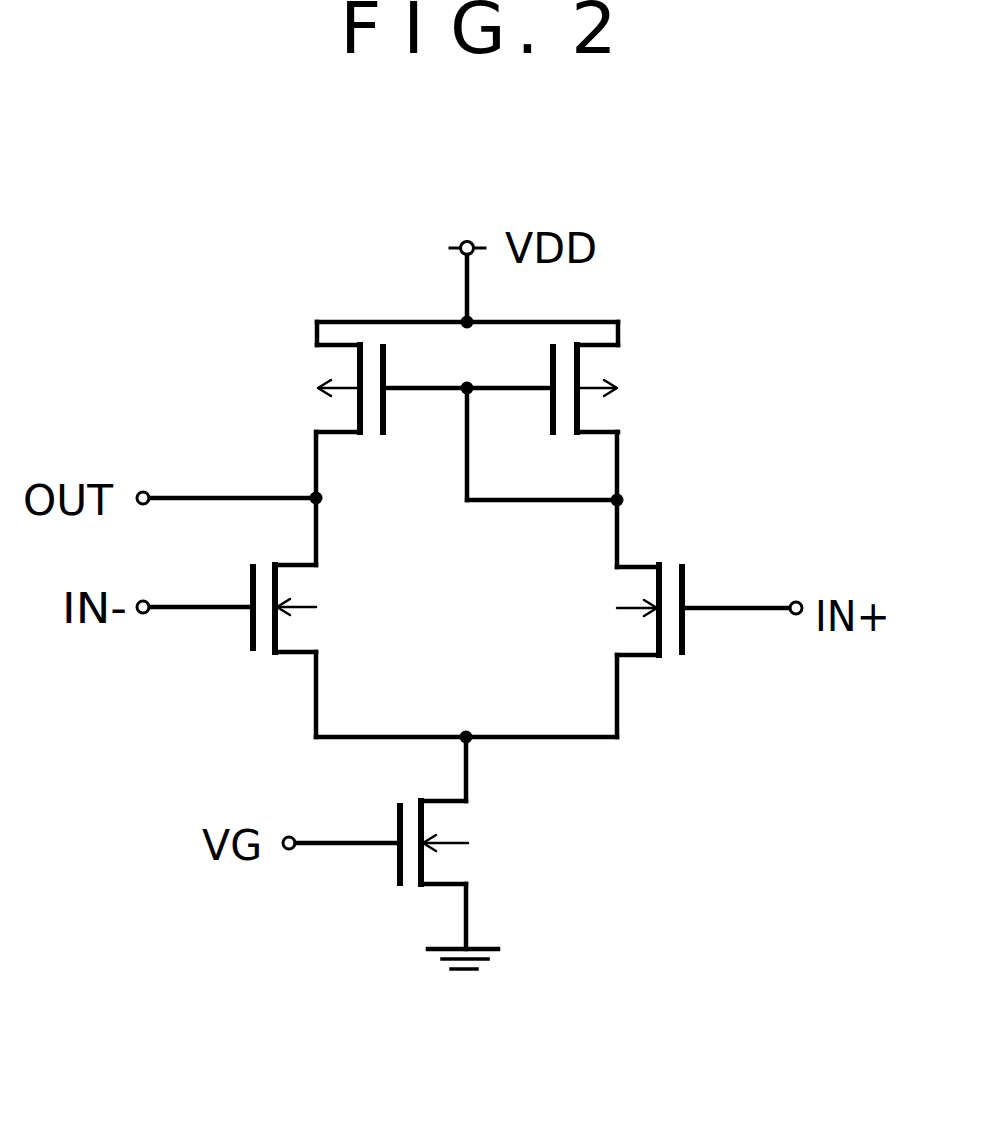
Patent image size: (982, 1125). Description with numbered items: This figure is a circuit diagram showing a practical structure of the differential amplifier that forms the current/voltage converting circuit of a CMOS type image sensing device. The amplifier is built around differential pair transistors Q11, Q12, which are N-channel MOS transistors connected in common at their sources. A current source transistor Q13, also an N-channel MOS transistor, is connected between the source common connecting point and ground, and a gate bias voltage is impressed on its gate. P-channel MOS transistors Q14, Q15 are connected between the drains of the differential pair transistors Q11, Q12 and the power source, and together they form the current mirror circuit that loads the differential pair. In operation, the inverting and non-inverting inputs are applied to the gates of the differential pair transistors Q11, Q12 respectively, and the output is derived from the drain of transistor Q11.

The differential pair transistor Q11 is at (297, 632).
The differential pair transistor Q12 is at (637, 585).
The current source transistor Q13 is at (445, 867).
The P-channel MOS transistor Q14 is at (332, 361).
The P-channel MOS transistor Q15 is at (618, 372).